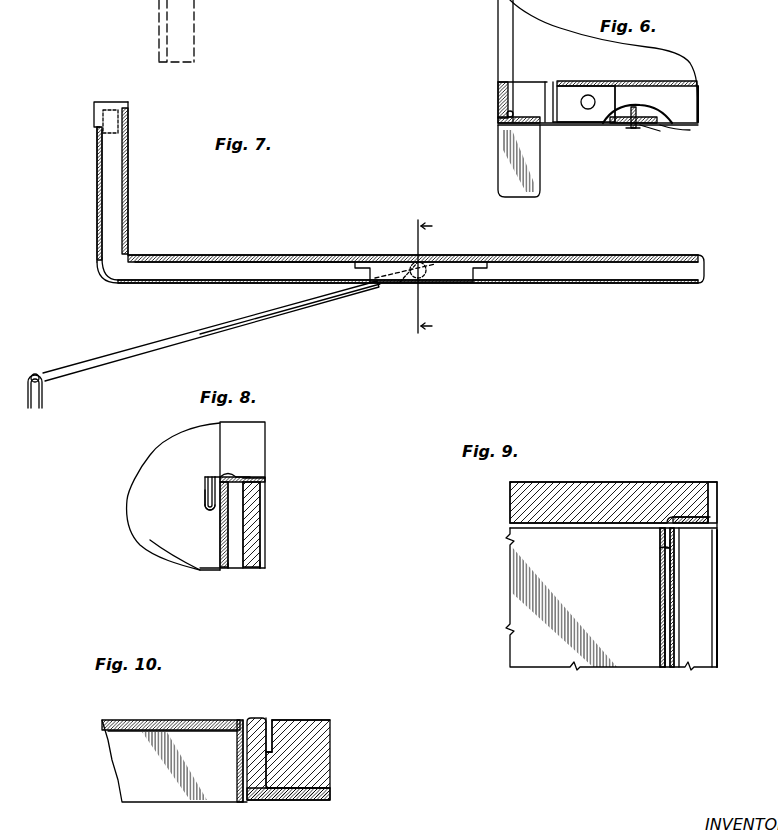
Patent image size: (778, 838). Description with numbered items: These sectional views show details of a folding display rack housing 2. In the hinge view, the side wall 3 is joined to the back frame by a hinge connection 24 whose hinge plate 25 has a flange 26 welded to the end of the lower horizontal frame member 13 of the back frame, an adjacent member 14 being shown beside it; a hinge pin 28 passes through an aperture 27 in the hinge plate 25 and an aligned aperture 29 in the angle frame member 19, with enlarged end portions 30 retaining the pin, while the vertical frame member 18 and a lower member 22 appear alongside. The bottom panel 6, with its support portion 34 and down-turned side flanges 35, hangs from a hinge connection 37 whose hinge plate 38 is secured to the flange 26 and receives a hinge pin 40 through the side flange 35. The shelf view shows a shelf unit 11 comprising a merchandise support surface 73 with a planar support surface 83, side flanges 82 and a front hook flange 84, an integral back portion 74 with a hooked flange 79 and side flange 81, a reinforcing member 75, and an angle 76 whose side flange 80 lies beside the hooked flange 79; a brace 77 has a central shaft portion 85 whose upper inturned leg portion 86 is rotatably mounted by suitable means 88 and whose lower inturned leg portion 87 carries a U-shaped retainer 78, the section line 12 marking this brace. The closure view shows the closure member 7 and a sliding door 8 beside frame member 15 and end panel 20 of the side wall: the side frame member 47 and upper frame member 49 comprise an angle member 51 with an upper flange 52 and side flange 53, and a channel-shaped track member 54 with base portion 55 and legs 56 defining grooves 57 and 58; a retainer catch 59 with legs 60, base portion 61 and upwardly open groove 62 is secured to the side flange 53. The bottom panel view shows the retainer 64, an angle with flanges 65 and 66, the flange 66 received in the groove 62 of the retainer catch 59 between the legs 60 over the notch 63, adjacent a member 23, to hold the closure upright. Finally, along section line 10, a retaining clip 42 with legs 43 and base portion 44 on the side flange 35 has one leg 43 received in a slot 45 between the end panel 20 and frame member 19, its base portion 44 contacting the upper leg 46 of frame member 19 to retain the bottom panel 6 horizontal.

In FIG. 9, the housing 2 is at (522, 482).
In FIG. 8, the side wall 3 is at (135, 482).
In FIG. 9, the side wall 3 is at (621, 482).
In FIG. 6, the bottom panel 6 is at (694, 80).
In FIG. 9, the bottom panel 6 is at (631, 667).
In FIG. 10, the bottom panel 6 is at (110, 748).
In FIG. 8, the closure member 7 is at (262, 570).
In FIG. 8, the sliding door 8 is at (262, 560).
In FIG. 8, the section line 10 is at (263, 438).
In FIG. 7, the shelf unit 11 is at (171, 256).
In FIG. 7, the section line 12 is at (412, 277).
In FIG. 6, the lower horizontal frame member 13 is at (507, 114).
In FIG. 6, the inner wall 14 is at (513, 55).
In FIG. 8, the frame member 15 is at (220, 425).
In FIG. 9, the frame member 15 is at (714, 482).
In FIG. 6, the frame member 18 is at (498, 40).
In FIG. 6, the frame member 19 is at (672, 126).
In FIG. 10, the frame member 19 is at (289, 800).
In FIG. 6, the end panel 20 is at (575, 30).
In FIG. 8, the end panel 20 is at (162, 540).
In FIG. 9, the end panel 20 is at (510, 505).
In FIG. 10, the end panel 20 is at (332, 740).
In FIG. 6, the door block 22 is at (500, 142).
In FIG. 9, the thin plate 23 is at (715, 522).
In FIG. 6, the hinge connection 24 is at (655, 111).
In FIG. 6, the hinge plate 25 is at (554, 125).
In FIG. 6, the flange 26 is at (498, 94).
In FIG. 6, the aperture 27 is at (650, 126).
In FIG. 6, the hinge pin 28 is at (629, 127).
In FIG. 6, the aperture 29 is at (643, 108).
In FIG. 6, the enlarged end portions 30 is at (633, 128).
In FIG. 6, the support portion 34 is at (648, 82).
In FIG. 9, the support portion 34 is at (510, 606).
In FIG. 10, the support portion 34 is at (190, 720).
In FIG. 6, the side flanges 35 is at (699, 111).
In FIG. 10, the side flanges 35 is at (237, 758).
In FIG. 6, the hinge connection 37 is at (613, 88).
In FIG. 6, the hinge plate 38 is at (556, 90).
In FIG. 6, the hinge pin 40 is at (590, 96).
In FIG. 10, the retaining clip 42 is at (277, 720).
In FIG. 10, the legs 43 is at (269, 730).
In FIG. 10, the base portion 44 is at (250, 718).
In FIG. 10, the slot 45 is at (282, 718).
In FIG. 10, the upper leg 46 is at (243, 742).
In FIG. 8, the side frame member 47 is at (232, 570).
In FIG. 8, the upper frame member 49 is at (263, 473).
In FIG. 9, the upper frame member 49 is at (717, 586).
In FIG. 8, the angle member 51 is at (218, 475).
In FIG. 9, the angle member 51 is at (716, 622).
In FIG. 8, the upper or lower flange 52 is at (214, 476).
In FIG. 8, the side flange 53 is at (226, 535).
In FIG. 8, the channel-shaped track member 54 is at (261, 495).
In FIG. 8, the base portion 55 is at (250, 477).
In FIG. 8, the legs 56 is at (262, 500).
In FIG. 8, the groove 57 is at (232, 476).
In FIG. 8, the groove 58 is at (250, 476).
In FIG. 8, the retainer catch 59 is at (205, 495).
In FIG. 9, the retainer catch 59 is at (662, 637).
In FIG. 8, the legs 60 is at (206, 478).
In FIG. 9, the legs 60 is at (682, 580).
In FIG. 8, the base portion 61 is at (209, 510).
In FIG. 9, the base portion 61 is at (675, 612).
In FIG. 8, the groove 62 is at (205, 483).
In FIG. 9, the groove 62 is at (662, 595).
In FIG. 9, the notch 63 is at (676, 557).
In FIG. 9, the retainer 64 is at (662, 537).
In FIG. 9, the flange 65 is at (690, 524).
In FIG. 9, the flange 66 is at (660, 550).
In FIG. 7, the merchandise support surface 73 is at (309, 257).
In FIG. 7, the back portion 74 is at (126, 200).
In FIG. 7, the reinforcing member 75 is at (463, 282).
In FIG. 7, the angle 76 is at (104, 272).
In FIG. 7, the brace 77 is at (312, 300).
In FIG. 7, the retainer 78 is at (43, 397).
In FIG. 7, the hooked flange 79 is at (104, 110).
In FIG. 7, the side flange 80 is at (99, 178).
In FIG. 7, the side flange 81 is at (97, 227).
In FIG. 7, the side flanges 82 is at (607, 283).
In FIG. 7, the planar support surface 83 is at (236, 257).
In FIG. 7, the front hook flange 84 is at (705, 271).
In FIG. 7, the central shaft portion 85 is at (226, 322).
In FIG. 7, the upper inturned leg portion 86 is at (414, 283).
In FIG. 7, the lower inturned leg portion 87 is at (37, 374).
In FIG. 7, the suitable means 88 is at (421, 263).